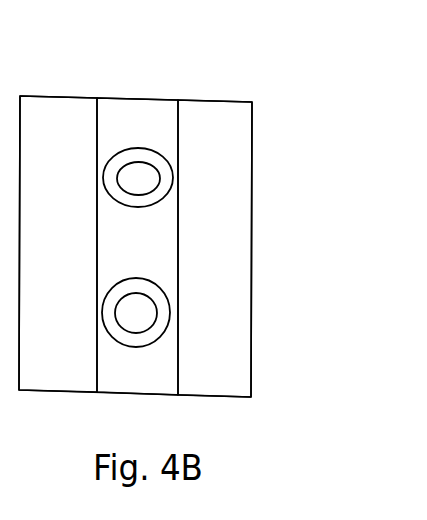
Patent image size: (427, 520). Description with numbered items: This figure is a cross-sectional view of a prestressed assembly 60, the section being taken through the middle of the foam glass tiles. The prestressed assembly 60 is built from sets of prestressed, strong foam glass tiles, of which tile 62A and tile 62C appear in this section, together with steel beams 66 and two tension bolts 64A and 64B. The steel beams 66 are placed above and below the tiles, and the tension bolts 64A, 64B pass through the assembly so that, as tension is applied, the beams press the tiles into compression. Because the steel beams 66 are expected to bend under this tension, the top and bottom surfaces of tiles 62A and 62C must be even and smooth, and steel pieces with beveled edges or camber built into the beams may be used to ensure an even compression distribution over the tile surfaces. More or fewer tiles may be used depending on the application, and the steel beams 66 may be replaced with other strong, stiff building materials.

The prestressed assembly 60 is at (164, 88).
The prestressed strong foam glass tile 62A is at (212, 257).
The prestressed strong foam glass tile 62C is at (61, 125).
The tension bolt 64A is at (135, 179).
The tension bolt 64B is at (133, 313).
The steel beam 66 is at (135, 377).